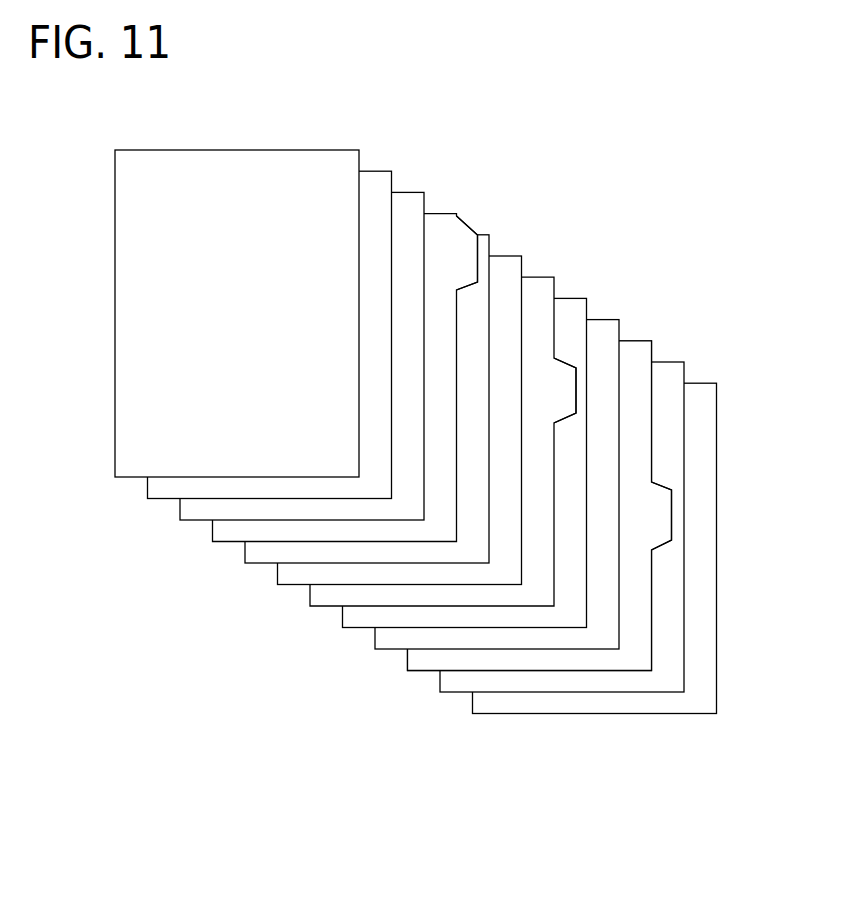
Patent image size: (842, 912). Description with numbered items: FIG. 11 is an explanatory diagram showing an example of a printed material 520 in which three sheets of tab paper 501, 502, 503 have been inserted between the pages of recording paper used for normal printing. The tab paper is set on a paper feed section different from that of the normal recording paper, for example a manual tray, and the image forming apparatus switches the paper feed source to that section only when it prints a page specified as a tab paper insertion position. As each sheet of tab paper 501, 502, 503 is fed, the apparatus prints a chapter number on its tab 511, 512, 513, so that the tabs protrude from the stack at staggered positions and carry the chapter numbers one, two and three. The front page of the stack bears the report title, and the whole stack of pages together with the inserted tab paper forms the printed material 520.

The tab paper 501 is at (440, 212).
The tab 511 is at (467, 231).
The tab paper 502 is at (537, 274).
The tab 512 is at (561, 358).
The tab paper 503 is at (635, 341).
The tab 513 is at (660, 482).
The printed material 520 is at (418, 480).